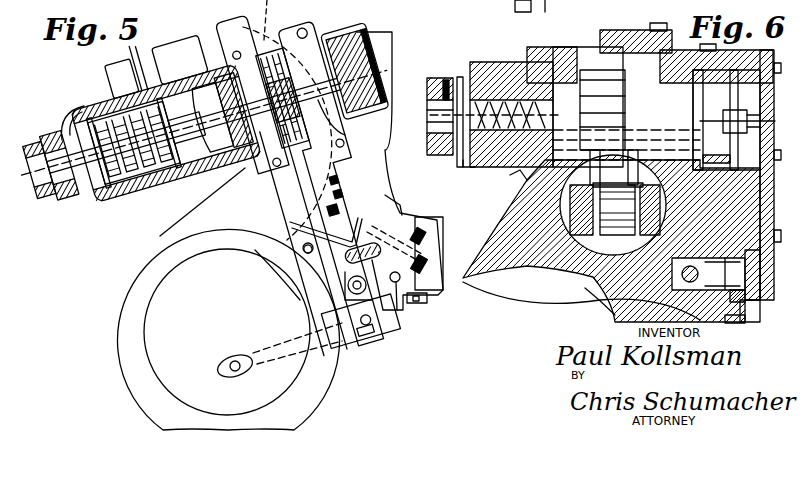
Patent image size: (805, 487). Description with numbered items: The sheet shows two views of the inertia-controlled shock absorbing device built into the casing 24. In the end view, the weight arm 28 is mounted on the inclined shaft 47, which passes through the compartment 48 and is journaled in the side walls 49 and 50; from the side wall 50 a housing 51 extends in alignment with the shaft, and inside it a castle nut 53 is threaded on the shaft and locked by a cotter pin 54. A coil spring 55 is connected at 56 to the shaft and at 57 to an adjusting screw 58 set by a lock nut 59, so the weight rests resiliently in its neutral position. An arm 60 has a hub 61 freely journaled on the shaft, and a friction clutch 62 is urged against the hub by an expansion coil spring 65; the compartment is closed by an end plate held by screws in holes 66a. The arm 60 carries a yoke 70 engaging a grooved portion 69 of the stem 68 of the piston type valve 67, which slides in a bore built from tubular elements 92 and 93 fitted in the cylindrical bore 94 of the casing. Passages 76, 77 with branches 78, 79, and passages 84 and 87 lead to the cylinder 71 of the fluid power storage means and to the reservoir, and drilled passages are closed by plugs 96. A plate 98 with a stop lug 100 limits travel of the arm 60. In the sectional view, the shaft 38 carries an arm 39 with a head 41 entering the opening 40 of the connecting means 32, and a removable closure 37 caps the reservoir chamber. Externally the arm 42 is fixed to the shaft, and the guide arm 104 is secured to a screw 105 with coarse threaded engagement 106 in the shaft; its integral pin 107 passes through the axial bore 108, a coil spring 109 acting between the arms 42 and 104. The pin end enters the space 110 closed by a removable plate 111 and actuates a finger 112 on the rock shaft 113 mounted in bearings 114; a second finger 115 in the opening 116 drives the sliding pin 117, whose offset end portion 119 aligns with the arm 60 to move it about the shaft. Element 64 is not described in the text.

In FIG. 6, the casing 24 is at (515, 258).
In FIG. 5, the arm 28 is at (372, 80).
In FIG. 6, the connecting means 32 is at (580, 208).
In FIG. 6, the removable closure 37 is at (636, 33).
In FIG. 6, the shaft 38 is at (626, 107).
In FIG. 6, the arm 39 is at (602, 110).
In FIG. 6, the opening 40 is at (548, 222).
In FIG. 6, the head 41 is at (618, 209).
In FIG. 6, the arm 42 is at (480, 66).
In FIG. 5, the shaft 47 is at (372, 58).
In FIG. 5, the compartment 48 is at (284, 30).
In FIG. 5, the side wall 49 is at (308, 36).
In FIG. 5, the side wall 50 is at (232, 38).
In FIG. 5, the housing 51 is at (84, 112).
In FIG. 5, the castle nut 53 is at (228, 170).
In FIG. 5, the cotter pin 54 is at (196, 80).
In FIG. 5, the coil spring 55 is at (138, 188).
In FIG. 5, the spring connection 56 is at (178, 168).
In FIG. 5, the spring connection 57 is at (68, 128).
In FIG. 5, the adjusting screw 58 is at (72, 200).
In FIG. 5, the lock nut 59 is at (38, 150).
In FIG. 5, the arm 60 is at (342, 138).
In FIG. 5, the hub 61 is at (300, 110).
In FIG. 5, the friction clutch 62 is at (296, 72).
In FIG. 5, the gear 64 is at (243, 30).
In FIG. 5, the expansion coil spring 65 is at (303, 240).
In FIG. 5, the holes 66a is at (405, 302).
In FIG. 6, the piston type valve 67 is at (558, 7).
In FIG. 6, the stem 68 is at (597, 6).
In FIG. 5, the grooved portion 69 is at (348, 287).
In FIG. 5, the yoke 70 is at (345, 256).
In FIG. 5, the cylinder 71 is at (118, 296).
In FIG. 6, the cylinder 71 is at (535, 300).
In FIG. 5, the passage 76 is at (255, 255).
In FIG. 6, the passage 76 is at (582, 270).
In FIG. 5, the passage 77 is at (352, 347).
In FIG. 6, the passage 77 is at (398, 8).
In FIG. 6, the branch 78 is at (375, 14).
In FIG. 5, the branch 79 is at (383, 328).
In FIG. 6, the branch 79 is at (530, 11).
In FIG. 5, the passage 84 is at (388, 210).
In FIG. 5, the passage 87 is at (300, 252).
In FIG. 6, the tubular elements 92 is at (449, 6).
In FIG. 6, the tubular elements 93 is at (479, 6).
In FIG. 6, the cylindrical bore 94 is at (507, 15).
In FIG. 5, the closure plugs 96 is at (432, 242).
In FIG. 5, the plate 98 is at (350, 143).
In FIG. 5, the stop lug 100 is at (306, 236).
In FIG. 6, the arm 104 is at (456, 158).
In FIG. 6, the screw 105 is at (436, 108).
In FIG. 6, the threaded engagement 106 is at (518, 172).
In FIG. 6, the pin 107 is at (712, 115).
In FIG. 6, the axial bore 108 is at (548, 52).
In FIG. 6, the coil spring 109 is at (452, 73).
In FIG. 6, the space 110 is at (765, 55).
In FIG. 6, the removable plate 111 is at (764, 225).
In FIG. 6, the finger 112 is at (755, 120).
In FIG. 6, the rock shaft 113 is at (735, 170).
In FIG. 6, the bearings 114 is at (755, 318).
In FIG. 6, the second finger 115 is at (748, 255).
In FIG. 6, the opening 116 is at (746, 296).
In FIG. 6, the pin 117 is at (672, 268).
In FIG. 5, the offset end portion 119 is at (384, 226).
In FIG. 6, the offset end portion 119 is at (600, 285).